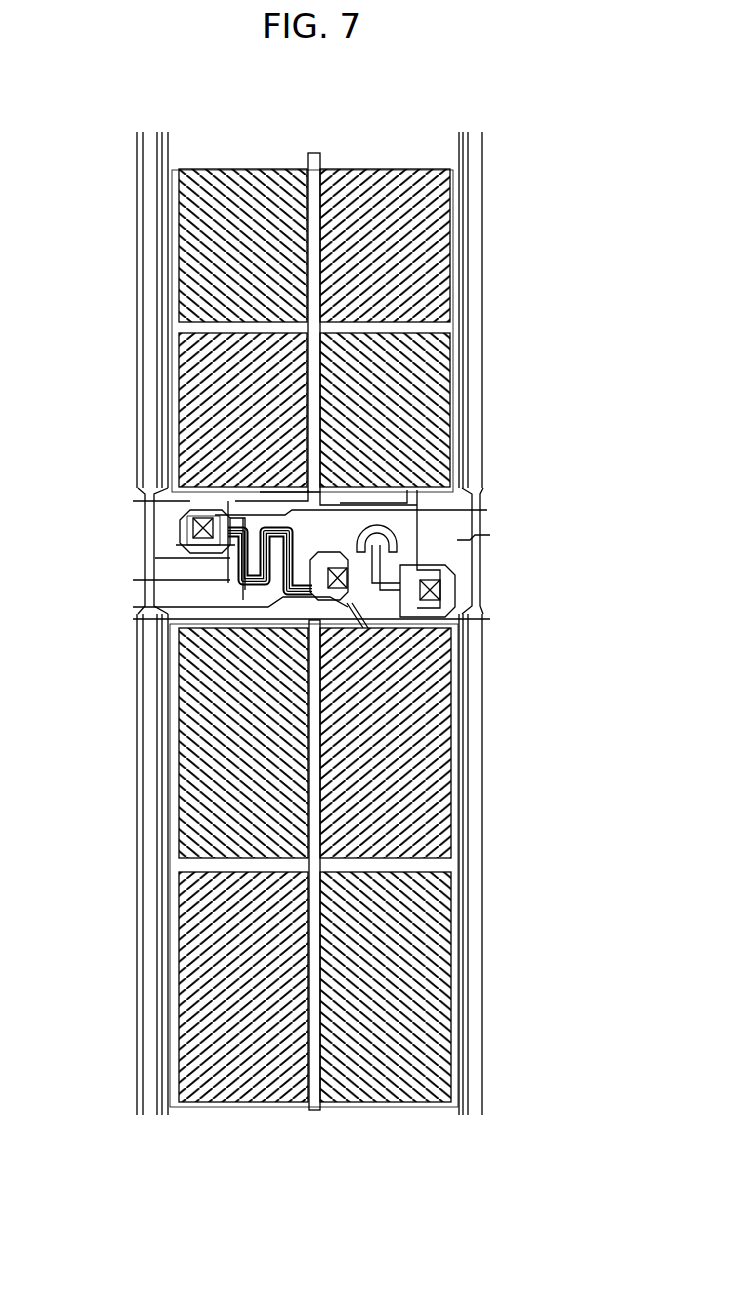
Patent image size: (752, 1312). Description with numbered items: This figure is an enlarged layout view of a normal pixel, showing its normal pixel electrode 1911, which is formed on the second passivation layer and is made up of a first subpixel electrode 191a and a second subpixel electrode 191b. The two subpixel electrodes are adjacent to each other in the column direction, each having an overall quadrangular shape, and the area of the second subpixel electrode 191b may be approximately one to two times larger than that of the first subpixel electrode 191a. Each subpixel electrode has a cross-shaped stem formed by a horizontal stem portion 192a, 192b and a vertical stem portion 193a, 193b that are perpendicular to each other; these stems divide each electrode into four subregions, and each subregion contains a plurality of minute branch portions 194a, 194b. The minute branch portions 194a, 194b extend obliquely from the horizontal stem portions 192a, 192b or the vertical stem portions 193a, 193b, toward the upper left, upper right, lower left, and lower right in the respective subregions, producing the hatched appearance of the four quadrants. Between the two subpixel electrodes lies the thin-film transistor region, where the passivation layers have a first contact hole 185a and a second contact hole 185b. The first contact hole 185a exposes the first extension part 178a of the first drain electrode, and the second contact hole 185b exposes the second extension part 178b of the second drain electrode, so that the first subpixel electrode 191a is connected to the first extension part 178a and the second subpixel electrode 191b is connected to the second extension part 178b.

The normal pixel electrode 1911 is at (434, 631).
The first subpixel electrode 191a is at (401, 329).
The second subpixel electrode 191b is at (400, 856).
The horizontal stem portion 192a is at (440, 325).
The horizontal stem portion 192b is at (440, 862).
The vertical stem portion 193a is at (318, 255).
The vertical stem portion 193b is at (318, 745).
The minute branch portions 194a is at (440, 211).
The minute branch portions 194b is at (440, 682).
The first contact hole 185a is at (198, 528).
The second contact hole 185b is at (337, 578).
The first extension part 178a is at (190, 540).
The second extension part 178b is at (355, 598).